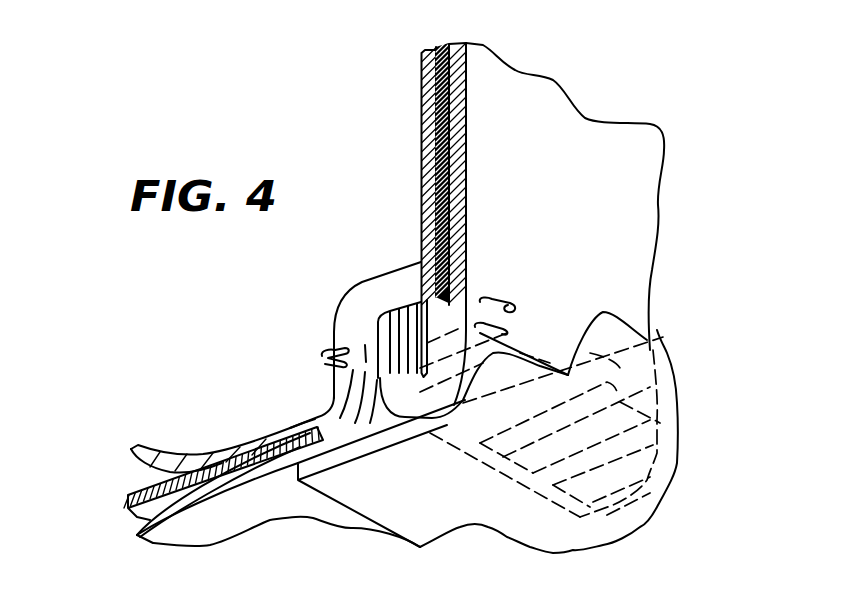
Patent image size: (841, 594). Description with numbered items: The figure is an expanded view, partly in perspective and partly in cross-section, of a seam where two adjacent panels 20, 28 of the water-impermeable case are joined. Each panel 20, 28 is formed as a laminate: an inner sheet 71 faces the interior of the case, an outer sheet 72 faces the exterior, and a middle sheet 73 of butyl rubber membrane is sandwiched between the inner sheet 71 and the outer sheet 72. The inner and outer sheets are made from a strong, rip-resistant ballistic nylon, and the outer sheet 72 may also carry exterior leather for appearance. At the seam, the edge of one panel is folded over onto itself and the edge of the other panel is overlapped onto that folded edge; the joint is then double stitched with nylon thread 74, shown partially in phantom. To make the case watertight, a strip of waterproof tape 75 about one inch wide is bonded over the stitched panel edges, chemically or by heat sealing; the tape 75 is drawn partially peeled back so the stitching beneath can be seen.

The panel 20 is at (353, 306).
The panel 28 is at (581, 227).
The inner sheet 71 is at (424, 65).
The outer sheet 72 is at (486, 44).
The middle sheet 73 is at (445, 50).
The nylon thread 74 is at (322, 355).
The waterproof tape 75 is at (657, 330).